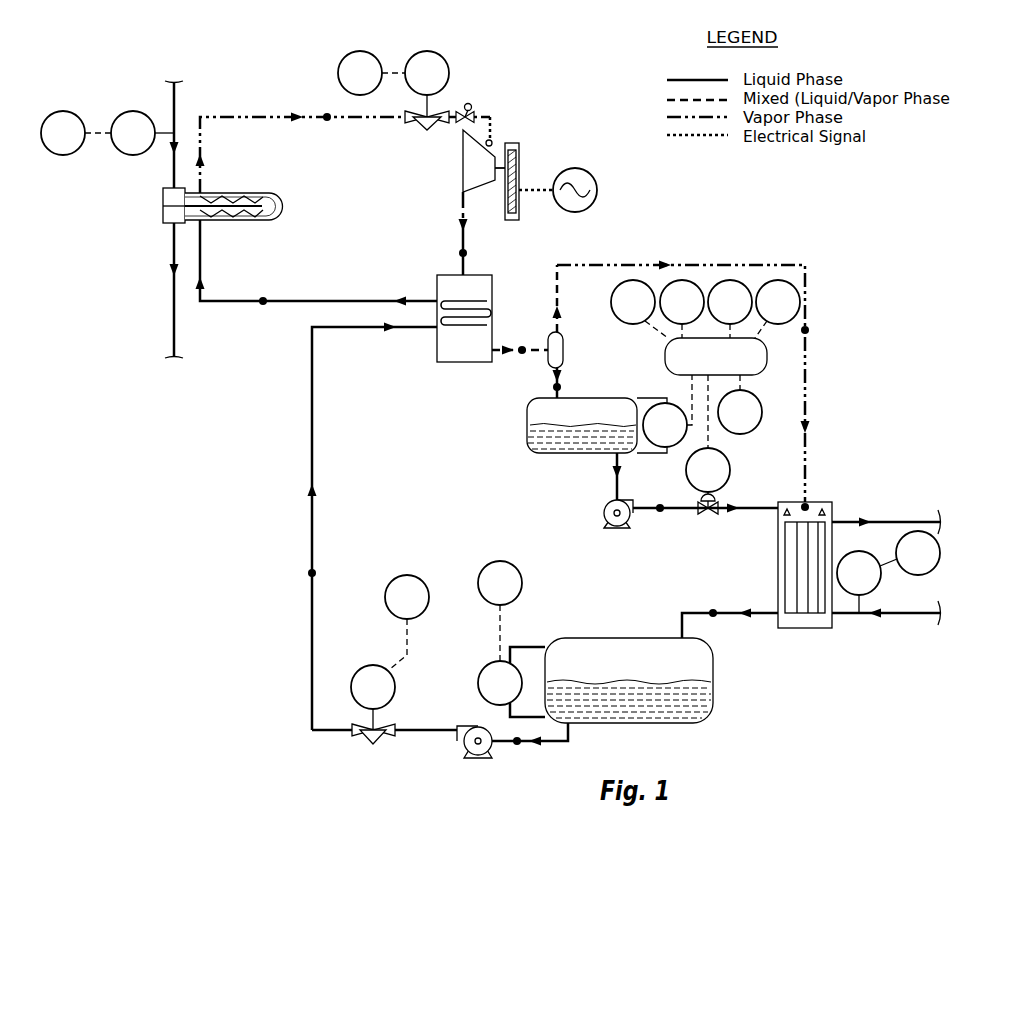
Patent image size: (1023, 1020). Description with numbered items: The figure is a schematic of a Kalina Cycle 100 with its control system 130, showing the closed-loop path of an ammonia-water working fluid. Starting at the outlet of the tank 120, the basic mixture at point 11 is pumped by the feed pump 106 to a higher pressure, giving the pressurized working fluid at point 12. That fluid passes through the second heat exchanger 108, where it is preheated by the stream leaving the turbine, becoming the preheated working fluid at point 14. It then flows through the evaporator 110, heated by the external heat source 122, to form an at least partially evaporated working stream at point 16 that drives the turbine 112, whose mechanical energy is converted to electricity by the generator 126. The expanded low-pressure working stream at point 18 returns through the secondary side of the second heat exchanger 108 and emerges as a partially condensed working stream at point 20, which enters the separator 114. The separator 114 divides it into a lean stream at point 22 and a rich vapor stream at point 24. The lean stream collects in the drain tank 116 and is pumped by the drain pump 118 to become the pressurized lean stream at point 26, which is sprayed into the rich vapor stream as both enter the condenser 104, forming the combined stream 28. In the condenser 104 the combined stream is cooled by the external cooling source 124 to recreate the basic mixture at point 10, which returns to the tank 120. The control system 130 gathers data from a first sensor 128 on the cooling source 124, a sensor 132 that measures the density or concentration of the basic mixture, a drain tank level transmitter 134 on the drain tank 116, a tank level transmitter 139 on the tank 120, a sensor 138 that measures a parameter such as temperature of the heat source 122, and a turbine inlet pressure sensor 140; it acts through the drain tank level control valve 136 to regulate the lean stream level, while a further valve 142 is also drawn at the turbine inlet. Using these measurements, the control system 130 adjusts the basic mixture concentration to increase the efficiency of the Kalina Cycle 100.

The Kalina Cycle 100 is at (770, 742).
The condenser 104 is at (833, 502).
The feed pump 106 is at (464, 754).
The second heat exchanger 108 is at (488, 275).
The evaporator 110 is at (283, 206).
The turbine 112 is at (492, 141).
The separator 114 is at (563, 336).
The drain tank 116 is at (527, 437).
The drain pump 118 is at (604, 515).
The tank 120 is at (713, 705).
The heat source 122 is at (172, 92).
The cooling source 124 is at (848, 614).
The generator 126 is at (519, 160).
The first sensor 128 is at (918, 572).
The control system 130 is at (705, 357).
The sensor 132 is at (391, 648).
The drain tank level transmitter 134 is at (667, 411).
The drain tank level control valve 136 is at (708, 444).
The sensor 138 is at (107, 133).
The tank level transmitter 139 is at (528, 639).
The turbine inlet pressure sensor 140 is at (393, 90).
The valve 142 is at (472, 104).
The basic mixture point 10 is at (730, 625).
The basic working fluid mixture point 11 is at (530, 746).
The pressurized working fluid point 12 is at (358, 527).
The preheated working fluid point 14 is at (317, 274).
The at least partially evaporated working stream point 16 is at (301, 153).
The low-pressure working stream point 18 is at (451, 233).
The partially condensed working stream point 20 is at (520, 339).
The lean stream point 22 is at (570, 383).
The rich vapor stream point 24 is at (696, 384).
The pressurized lean stream point 26 is at (705, 519).
The combined stream 28 is at (861, 508).